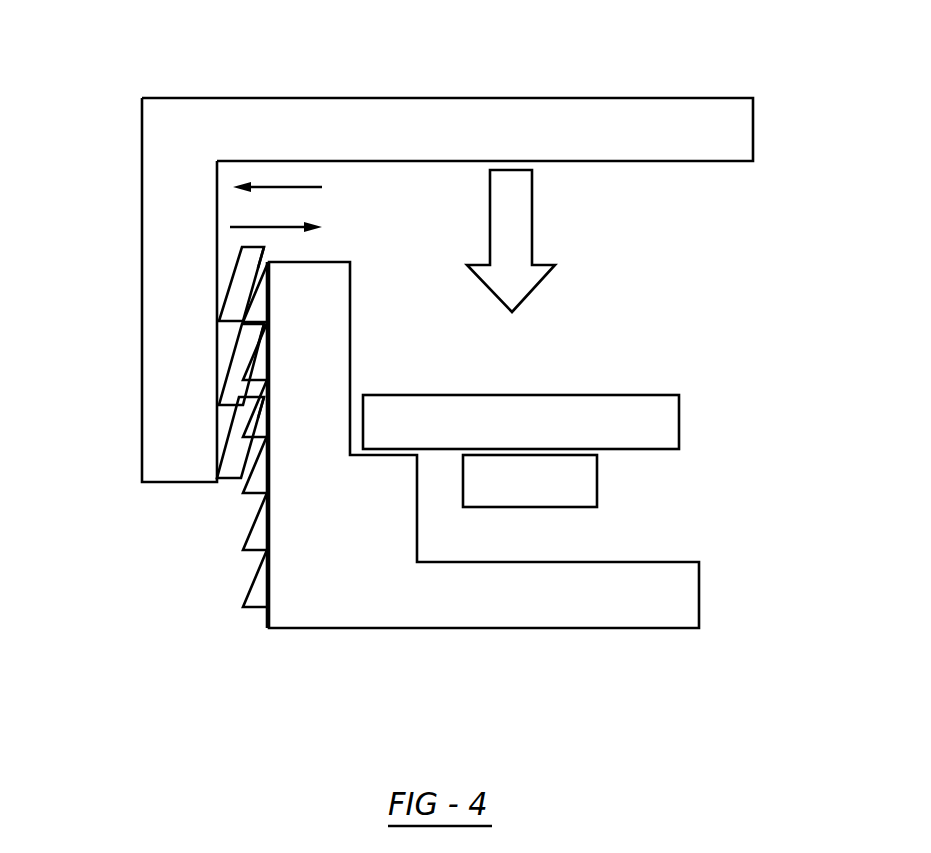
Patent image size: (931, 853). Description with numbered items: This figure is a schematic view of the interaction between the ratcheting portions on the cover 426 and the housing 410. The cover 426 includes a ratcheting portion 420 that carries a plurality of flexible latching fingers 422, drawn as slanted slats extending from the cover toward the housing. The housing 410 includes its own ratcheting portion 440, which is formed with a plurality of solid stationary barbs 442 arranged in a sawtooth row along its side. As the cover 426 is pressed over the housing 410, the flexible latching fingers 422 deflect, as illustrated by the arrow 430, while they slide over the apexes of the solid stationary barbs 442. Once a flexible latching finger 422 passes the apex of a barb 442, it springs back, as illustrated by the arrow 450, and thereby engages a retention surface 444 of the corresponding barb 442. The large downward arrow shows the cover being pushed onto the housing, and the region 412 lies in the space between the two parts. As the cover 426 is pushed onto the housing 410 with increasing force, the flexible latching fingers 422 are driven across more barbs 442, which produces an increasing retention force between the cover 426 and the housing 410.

The housing 410 is at (350, 597).
The gap / receiving space 412 is at (649, 315).
The ratcheting portion 420 is at (434, 293).
The flexible latching fingers 422 is at (240, 270).
The cover 426 is at (310, 123).
The arrow 430 is at (300, 187).
The ratcheting portion 440 is at (286, 510).
The solid stationary barbs 442 is at (263, 412).
The retention surface 444 is at (257, 438).
The arrow 450 is at (280, 227).